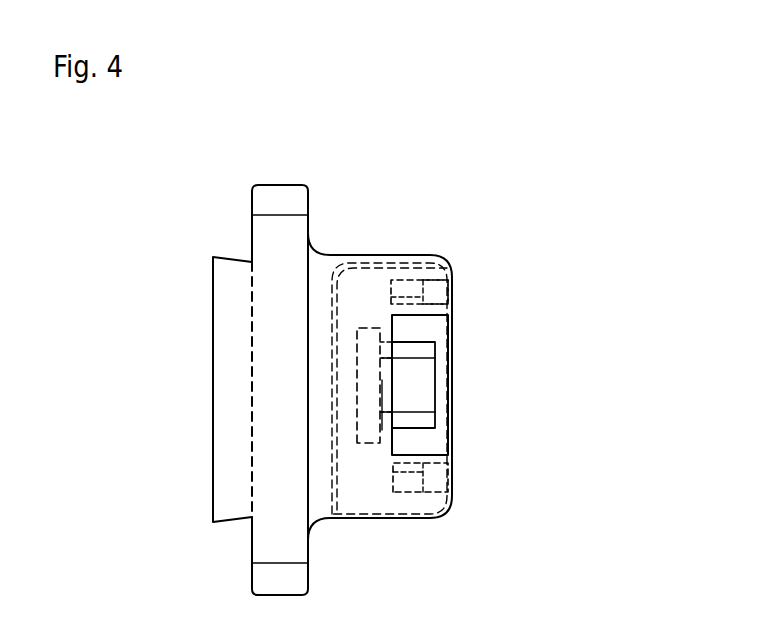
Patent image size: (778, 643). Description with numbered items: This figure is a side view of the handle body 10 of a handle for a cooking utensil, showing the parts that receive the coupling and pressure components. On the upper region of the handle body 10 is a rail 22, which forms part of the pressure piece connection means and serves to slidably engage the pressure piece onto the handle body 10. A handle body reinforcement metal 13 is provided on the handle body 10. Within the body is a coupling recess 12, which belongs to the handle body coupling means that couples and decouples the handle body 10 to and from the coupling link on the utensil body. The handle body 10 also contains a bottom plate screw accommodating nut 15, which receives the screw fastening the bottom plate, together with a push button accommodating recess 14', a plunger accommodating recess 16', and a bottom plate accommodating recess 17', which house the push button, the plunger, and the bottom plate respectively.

The handle body 10 is at (287, 442).
The rail 22 is at (233, 358).
The handle body reinforcement metal 13 is at (400, 516).
The coupling recess 12 is at (372, 338).
The bottom plate screw accommodating nut 15 is at (410, 295).
The bottom plate accommodating recess 17' is at (504, 296).
The push button accommodating recess 14' is at (488, 385).
The plunger accommodating recess 16' is at (483, 417).